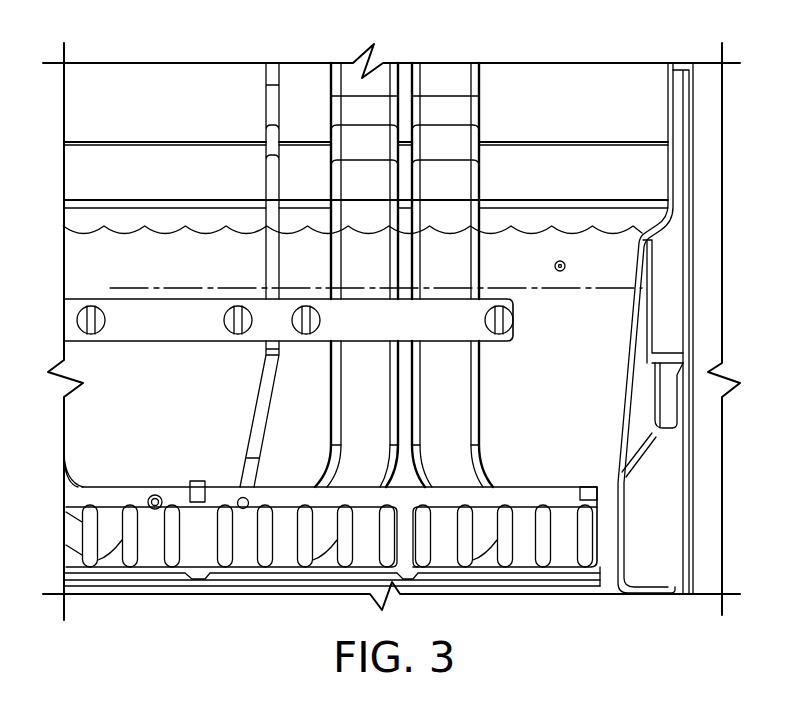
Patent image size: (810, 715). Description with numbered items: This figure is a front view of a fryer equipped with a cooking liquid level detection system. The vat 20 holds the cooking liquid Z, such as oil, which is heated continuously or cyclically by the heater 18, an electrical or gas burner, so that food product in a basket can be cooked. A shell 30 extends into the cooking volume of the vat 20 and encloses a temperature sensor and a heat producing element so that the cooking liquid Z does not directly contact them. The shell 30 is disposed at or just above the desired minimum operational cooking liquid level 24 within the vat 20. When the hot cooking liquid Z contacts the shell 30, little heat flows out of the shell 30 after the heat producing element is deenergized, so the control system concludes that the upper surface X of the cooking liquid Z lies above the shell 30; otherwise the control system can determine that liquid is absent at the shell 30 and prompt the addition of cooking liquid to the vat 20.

The heater 18 is at (352, 416).
The vat 20 is at (662, 322).
The desired minimum operational cooking liquid level 24 is at (122, 288).
The shell 30 is at (565, 270).
The upper surface X is at (527, 233).
The cooking liquid Z is at (526, 414).